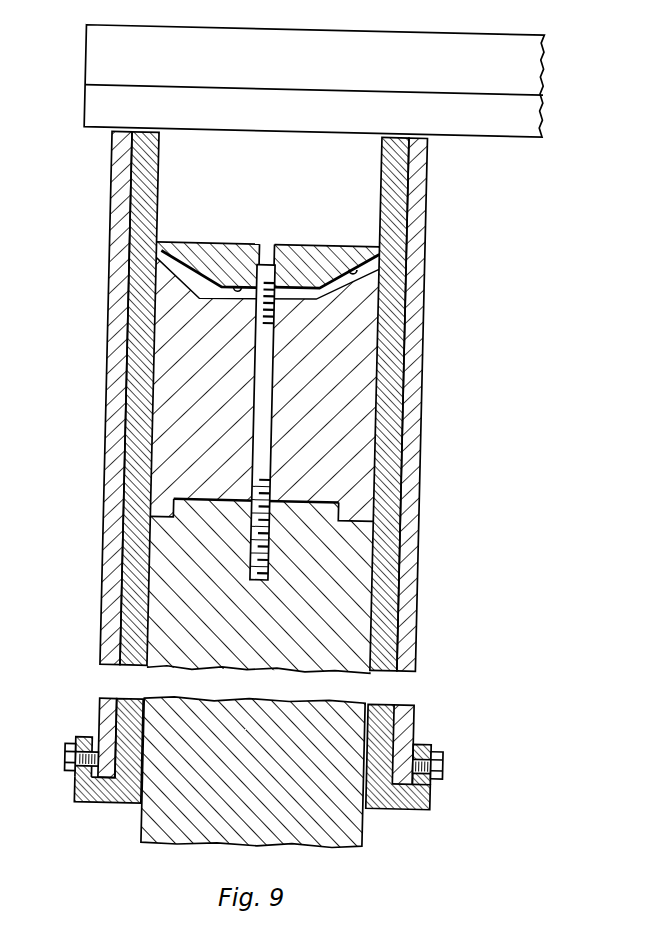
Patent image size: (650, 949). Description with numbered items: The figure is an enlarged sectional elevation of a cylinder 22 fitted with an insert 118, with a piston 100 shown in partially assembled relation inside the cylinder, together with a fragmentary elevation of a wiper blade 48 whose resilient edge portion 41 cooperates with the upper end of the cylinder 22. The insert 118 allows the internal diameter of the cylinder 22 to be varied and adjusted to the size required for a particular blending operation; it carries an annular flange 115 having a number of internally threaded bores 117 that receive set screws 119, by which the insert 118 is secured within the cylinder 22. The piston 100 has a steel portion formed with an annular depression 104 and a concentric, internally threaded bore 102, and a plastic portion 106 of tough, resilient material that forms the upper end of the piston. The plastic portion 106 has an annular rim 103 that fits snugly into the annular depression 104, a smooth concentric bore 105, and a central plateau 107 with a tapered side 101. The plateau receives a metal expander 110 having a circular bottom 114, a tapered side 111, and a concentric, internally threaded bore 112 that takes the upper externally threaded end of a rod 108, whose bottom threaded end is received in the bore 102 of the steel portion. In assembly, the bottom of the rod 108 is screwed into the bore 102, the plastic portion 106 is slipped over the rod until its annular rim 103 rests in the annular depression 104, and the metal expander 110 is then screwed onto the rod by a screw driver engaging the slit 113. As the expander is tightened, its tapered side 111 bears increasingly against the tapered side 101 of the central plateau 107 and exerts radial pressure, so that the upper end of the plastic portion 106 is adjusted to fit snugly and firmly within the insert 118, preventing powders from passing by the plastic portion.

The wiper blade 48 is at (410, 29).
The resilient edge portion 41 is at (509, 131).
The cylinder 22 is at (422, 189).
The insert 118 is at (397, 607).
The tapered side 101 is at (181, 270).
The metal expander 110 is at (196, 244).
The circular bottom 114 is at (235, 286).
The slit 113 is at (262, 246).
The concentric, internally threaded bore 112 is at (279, 267).
The tapered side 111 is at (350, 262).
The central plateau 107 is at (237, 302).
The rod 108 is at (268, 365).
The plastic portion 106 is at (344, 399).
The smooth concentric bore 105 is at (254, 428).
The annular rim 103 is at (167, 515).
The annular depression 104 is at (175, 523).
The concentric, internally threaded bore 102 is at (273, 557).
The piston 100 is at (299, 767).
The annular flange 115 is at (433, 741).
The set screws 119 is at (452, 760).
The internally threaded bores 117 is at (439, 792).